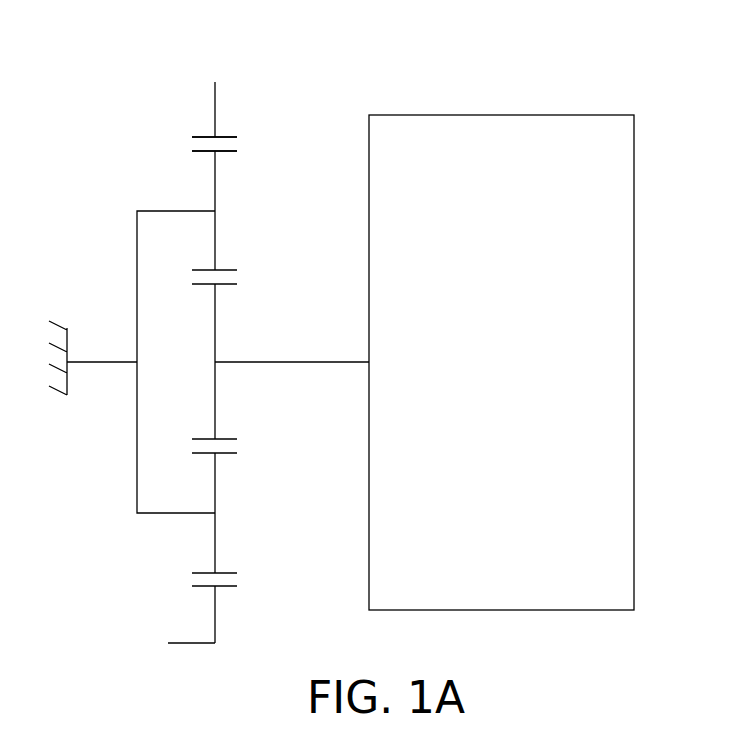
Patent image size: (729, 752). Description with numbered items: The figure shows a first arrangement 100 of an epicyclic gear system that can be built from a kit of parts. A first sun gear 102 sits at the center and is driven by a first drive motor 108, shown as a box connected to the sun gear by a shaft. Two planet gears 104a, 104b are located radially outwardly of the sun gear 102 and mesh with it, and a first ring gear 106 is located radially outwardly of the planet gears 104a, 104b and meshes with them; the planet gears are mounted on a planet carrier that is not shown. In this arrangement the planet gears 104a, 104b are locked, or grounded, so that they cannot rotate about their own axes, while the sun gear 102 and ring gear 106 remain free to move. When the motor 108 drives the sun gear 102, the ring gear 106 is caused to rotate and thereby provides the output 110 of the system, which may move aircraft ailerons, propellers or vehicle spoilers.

The first arrangement 100 is at (646, 78).
The first sun gear 102 is at (215, 325).
The planet gear 104a is at (215, 180).
The planet gear 104b is at (215, 488).
The first ring gear 106 is at (215, 102).
The first drive motor 108 is at (634, 363).
The output 110 is at (174, 656).